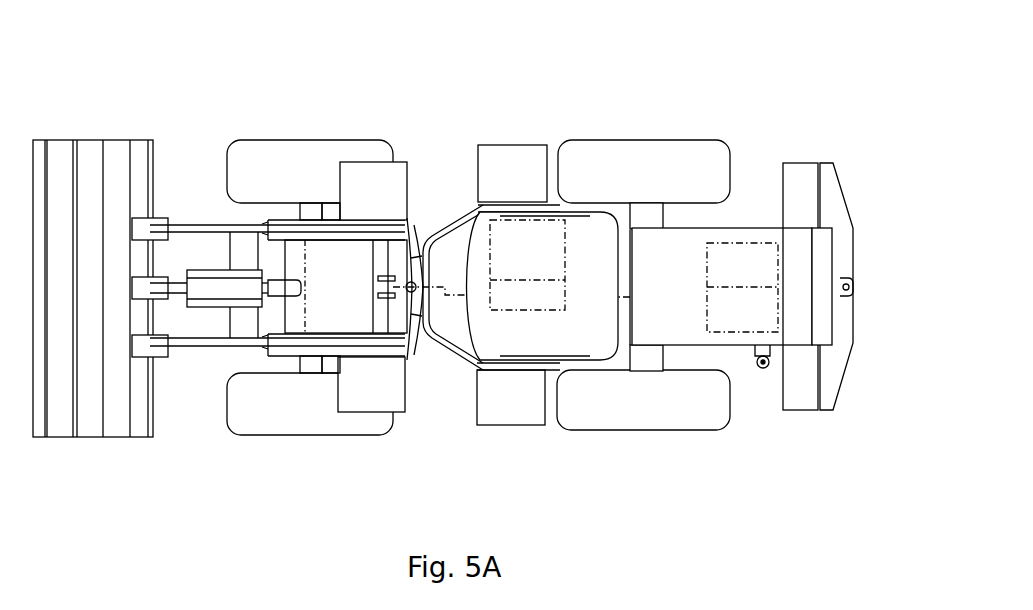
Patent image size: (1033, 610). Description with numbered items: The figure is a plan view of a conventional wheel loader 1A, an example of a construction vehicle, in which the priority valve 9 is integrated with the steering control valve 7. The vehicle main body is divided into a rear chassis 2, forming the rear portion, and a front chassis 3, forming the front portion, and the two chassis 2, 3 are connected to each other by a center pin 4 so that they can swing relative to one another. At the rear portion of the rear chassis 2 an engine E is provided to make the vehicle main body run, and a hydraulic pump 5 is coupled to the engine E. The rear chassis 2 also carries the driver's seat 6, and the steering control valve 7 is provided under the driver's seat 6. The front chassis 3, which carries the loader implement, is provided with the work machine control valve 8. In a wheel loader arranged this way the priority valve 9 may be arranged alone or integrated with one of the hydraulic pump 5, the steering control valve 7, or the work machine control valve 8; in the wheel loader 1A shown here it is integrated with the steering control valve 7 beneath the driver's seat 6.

The wheel loader 1A is at (443, 262).
The rear chassis 2 is at (678, 335).
The front chassis 3 is at (297, 323).
The center pin 4 is at (419, 276).
The hydraulic pump 5 is at (747, 325).
The driver's seat 6 is at (485, 340).
The steering control valve 7 is at (525, 230).
The work machine control valve 8 is at (350, 262).
The priority valve 9 is at (515, 300).
The engine E is at (748, 250).